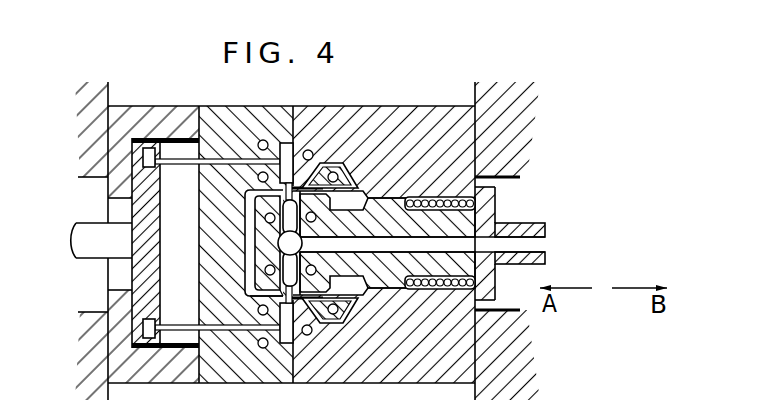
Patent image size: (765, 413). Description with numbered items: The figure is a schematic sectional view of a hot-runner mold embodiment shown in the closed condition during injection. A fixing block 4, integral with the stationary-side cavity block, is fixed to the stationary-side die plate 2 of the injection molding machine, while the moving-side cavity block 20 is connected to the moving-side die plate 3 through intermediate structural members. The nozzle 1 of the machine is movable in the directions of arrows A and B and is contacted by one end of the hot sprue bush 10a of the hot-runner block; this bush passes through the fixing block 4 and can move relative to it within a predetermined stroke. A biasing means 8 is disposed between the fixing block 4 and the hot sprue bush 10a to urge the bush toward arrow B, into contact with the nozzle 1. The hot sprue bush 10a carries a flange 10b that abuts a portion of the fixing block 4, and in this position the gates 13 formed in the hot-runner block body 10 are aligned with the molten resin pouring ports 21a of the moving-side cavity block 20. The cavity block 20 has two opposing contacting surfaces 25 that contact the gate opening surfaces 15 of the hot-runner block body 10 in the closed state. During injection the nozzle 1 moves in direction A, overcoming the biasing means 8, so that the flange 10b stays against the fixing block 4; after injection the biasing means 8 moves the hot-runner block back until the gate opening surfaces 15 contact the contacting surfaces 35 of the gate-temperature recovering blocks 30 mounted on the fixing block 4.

The nozzle 1 is at (521, 227).
The stationary-side die plate 2 is at (503, 128).
The moving-side die plate 3 is at (79, 118).
The fixing block 4 is at (407, 377).
The biasing means 8 is at (442, 202).
The hot-runner block body 10 is at (253, 244).
The hot sprue bush 10a is at (383, 218).
The flange 10b is at (498, 190).
The gates 13 is at (262, 255).
The gate opening surfaces 15 is at (256, 206).
The moving-side cavity block 20 is at (228, 374).
The molten resin pouring ports 21a is at (254, 294).
The contacting surfaces 25 is at (266, 187).
The gate-temperature recovering blocks 30 is at (327, 176).
The contacting surfaces 35 is at (349, 189).